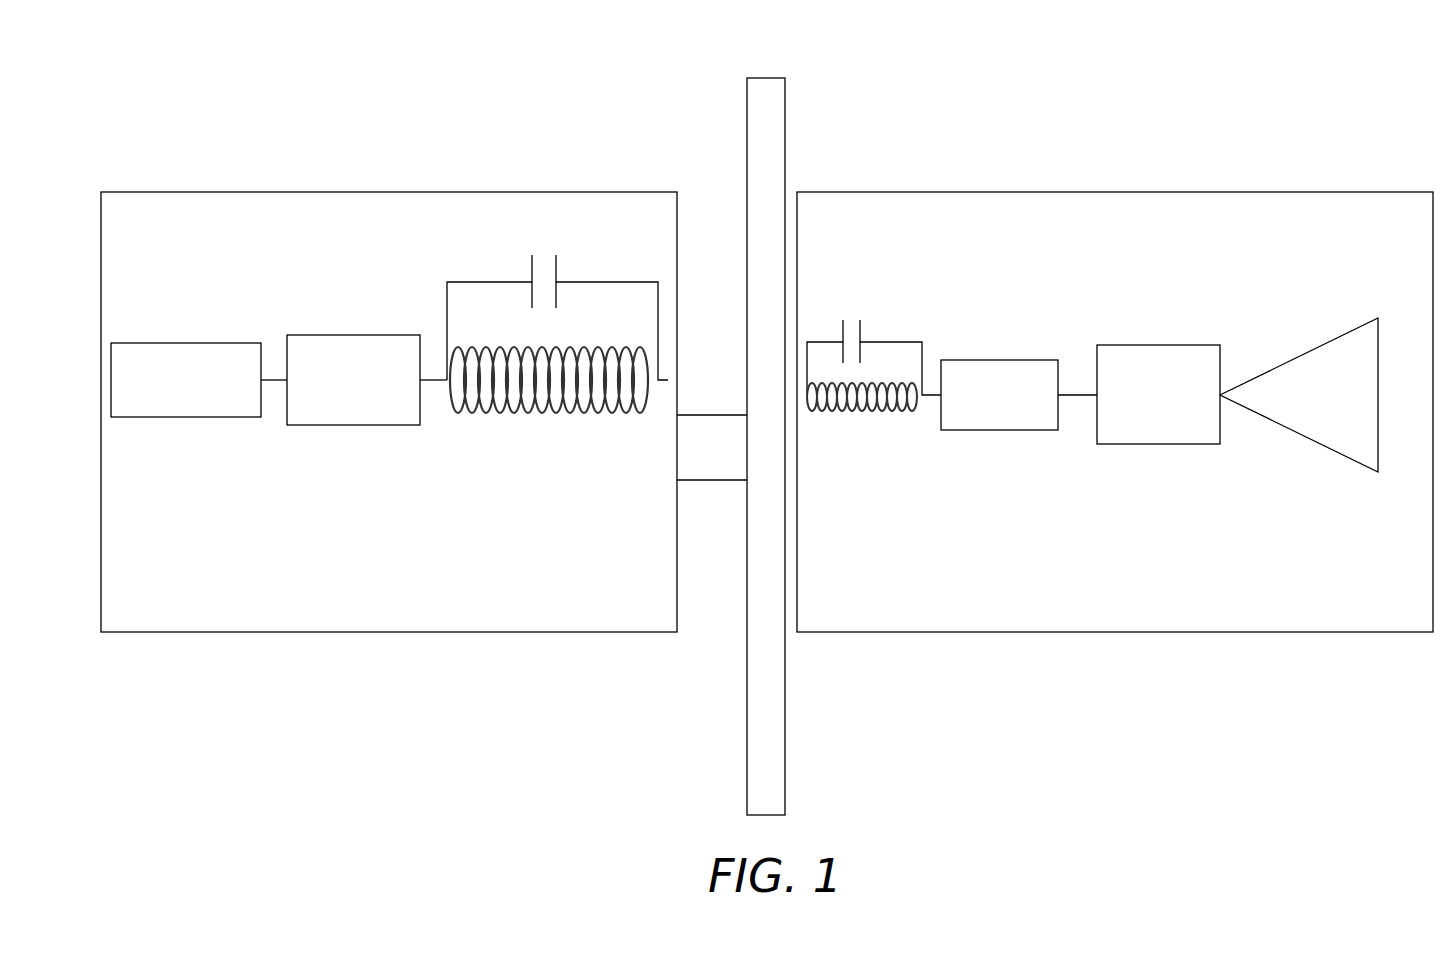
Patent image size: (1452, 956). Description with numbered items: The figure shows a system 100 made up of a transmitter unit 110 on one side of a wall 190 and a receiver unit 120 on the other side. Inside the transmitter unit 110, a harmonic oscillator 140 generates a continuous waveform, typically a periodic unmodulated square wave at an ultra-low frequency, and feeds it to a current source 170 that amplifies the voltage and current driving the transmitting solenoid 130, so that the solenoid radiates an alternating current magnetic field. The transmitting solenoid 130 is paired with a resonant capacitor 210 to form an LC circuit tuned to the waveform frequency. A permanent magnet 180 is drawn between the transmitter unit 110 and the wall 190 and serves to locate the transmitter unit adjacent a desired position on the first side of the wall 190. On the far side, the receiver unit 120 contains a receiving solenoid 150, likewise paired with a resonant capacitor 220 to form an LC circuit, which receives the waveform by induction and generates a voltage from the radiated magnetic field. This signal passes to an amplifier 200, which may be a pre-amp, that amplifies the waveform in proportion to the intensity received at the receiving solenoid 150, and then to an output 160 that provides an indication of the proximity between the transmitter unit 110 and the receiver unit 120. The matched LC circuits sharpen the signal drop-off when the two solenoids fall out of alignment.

The system 100 is at (992, 63).
The transmitter unit 110 is at (360, 632).
The receiver unit 120 is at (1108, 632).
The transmitting solenoid 130 is at (548, 408).
The harmonic oscillator 140 is at (186, 380).
The receiving solenoid 150 is at (870, 405).
The output 160 is at (1388, 461).
The current source 170 is at (353, 380).
The permanent magnet 180 is at (722, 414).
The wall 190 is at (747, 763).
The amplifier 200 is at (999, 395).
The resonant capacitor 210 is at (532, 274).
The resonant capacitor 220 is at (862, 332).